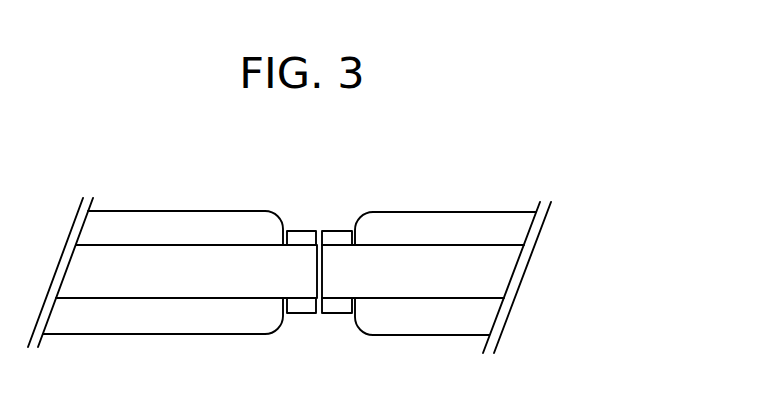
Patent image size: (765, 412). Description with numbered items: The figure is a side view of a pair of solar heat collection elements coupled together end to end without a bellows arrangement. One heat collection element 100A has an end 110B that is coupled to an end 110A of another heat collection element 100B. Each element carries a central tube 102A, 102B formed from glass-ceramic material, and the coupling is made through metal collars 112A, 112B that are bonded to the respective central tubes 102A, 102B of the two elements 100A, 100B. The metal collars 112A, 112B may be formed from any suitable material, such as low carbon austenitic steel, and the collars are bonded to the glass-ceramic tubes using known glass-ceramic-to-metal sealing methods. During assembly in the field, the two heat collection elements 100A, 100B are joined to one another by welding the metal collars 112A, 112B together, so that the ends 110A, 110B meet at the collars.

The heat collection element 100A is at (162, 168).
The heat collection element 100B is at (487, 170).
The central tube 102A is at (186, 271).
The central tube 102B is at (423, 271).
The end 110A is at (347, 212).
The end 110B is at (282, 197).
The metal collar 112A is at (303, 230).
The metal collar 112B is at (337, 230).